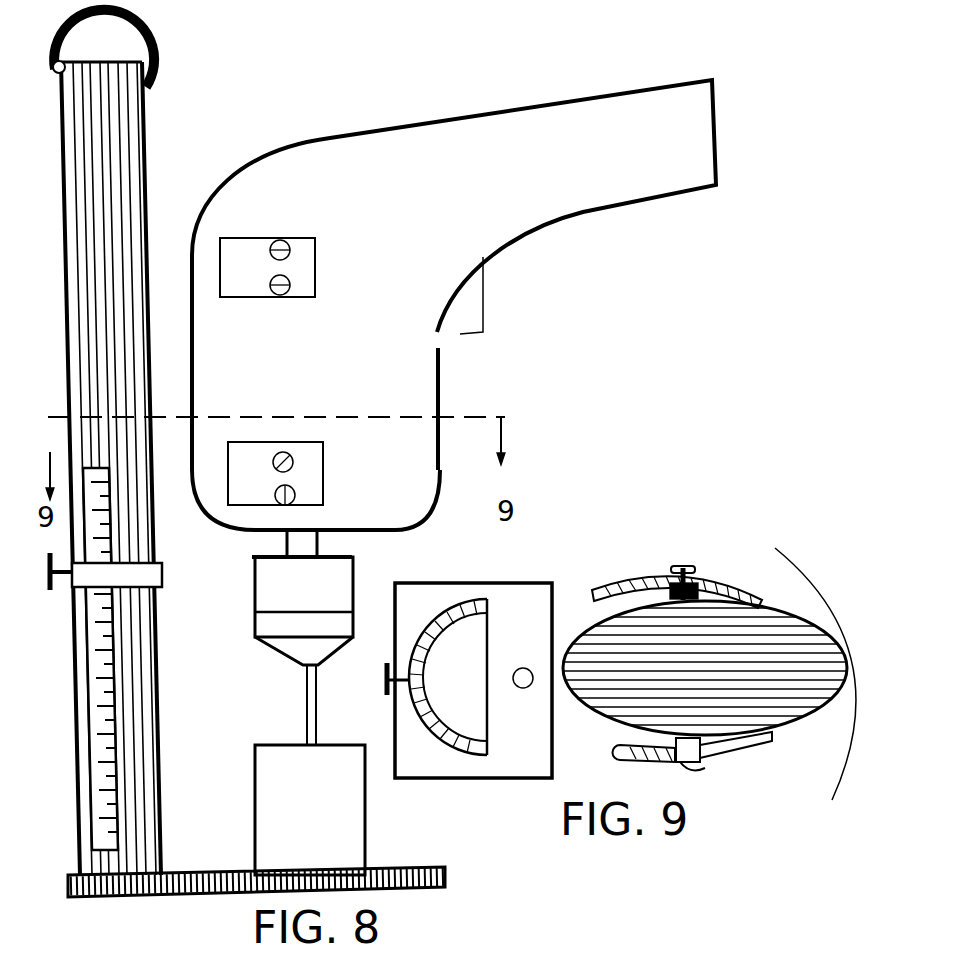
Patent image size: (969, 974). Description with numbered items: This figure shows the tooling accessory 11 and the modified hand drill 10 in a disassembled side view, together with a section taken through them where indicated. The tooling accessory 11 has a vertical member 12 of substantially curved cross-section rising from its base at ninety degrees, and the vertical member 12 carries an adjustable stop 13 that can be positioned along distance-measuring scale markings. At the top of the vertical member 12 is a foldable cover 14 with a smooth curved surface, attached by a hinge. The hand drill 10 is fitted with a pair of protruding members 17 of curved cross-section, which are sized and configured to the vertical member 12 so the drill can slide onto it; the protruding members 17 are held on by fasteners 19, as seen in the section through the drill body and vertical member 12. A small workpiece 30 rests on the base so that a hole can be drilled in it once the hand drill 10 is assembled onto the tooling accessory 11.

In FIG. 8, the hand drill 10 is at (415, 374).
In FIG. 9, the hand drill 10 is at (796, 622).
In FIG. 8, the tooling accessory 11 is at (143, 442).
In FIG. 8, the vertical member 12 is at (152, 175).
In FIG. 9, the vertical member 12 is at (482, 605).
In FIG. 8, the adjustable stop 13 is at (172, 585).
In FIG. 8, the foldable cover 14 is at (173, 55).
In FIG. 8, the protruding members 17 is at (305, 263).
In FIG. 9, the protruding members 17 is at (594, 580).
In FIG. 9, the fasteners 19 is at (682, 566).
In FIG. 8, the workpiece 30 is at (413, 553).